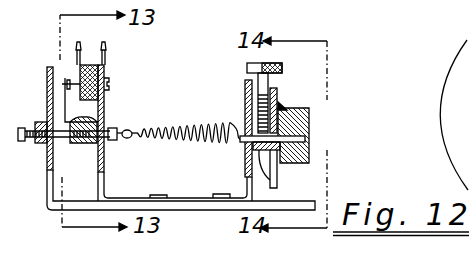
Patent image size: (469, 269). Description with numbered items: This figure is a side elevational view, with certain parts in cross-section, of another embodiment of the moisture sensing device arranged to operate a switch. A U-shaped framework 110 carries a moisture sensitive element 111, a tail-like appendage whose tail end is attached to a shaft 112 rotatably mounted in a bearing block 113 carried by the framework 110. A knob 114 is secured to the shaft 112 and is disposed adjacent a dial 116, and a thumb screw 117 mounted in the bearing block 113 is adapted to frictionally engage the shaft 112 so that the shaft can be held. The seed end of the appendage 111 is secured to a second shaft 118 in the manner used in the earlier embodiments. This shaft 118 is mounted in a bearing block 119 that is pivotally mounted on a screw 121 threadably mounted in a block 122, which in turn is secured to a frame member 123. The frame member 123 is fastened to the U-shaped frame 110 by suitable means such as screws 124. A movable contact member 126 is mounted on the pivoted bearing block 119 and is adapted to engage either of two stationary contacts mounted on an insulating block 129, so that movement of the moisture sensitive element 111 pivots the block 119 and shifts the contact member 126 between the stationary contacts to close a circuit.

The U-shaped framework 110 is at (117, 200).
The moisture sensitive element 111 is at (183, 128).
The shaft 112 is at (306, 139).
The bearing block 113 is at (278, 178).
The knob 114 is at (309, 112).
The dial 116 is at (276, 93).
The thumb screw 117 is at (270, 66).
The shaft 118 is at (92, 143).
The bearing block 119 is at (78, 143).
The screw 121 is at (19, 139).
The block 122 is at (35, 125).
The frame member 123 is at (47, 90).
The screws 124 is at (170, 197).
The movable contact member 126 is at (67, 83).
The insulating block 129 is at (100, 62).